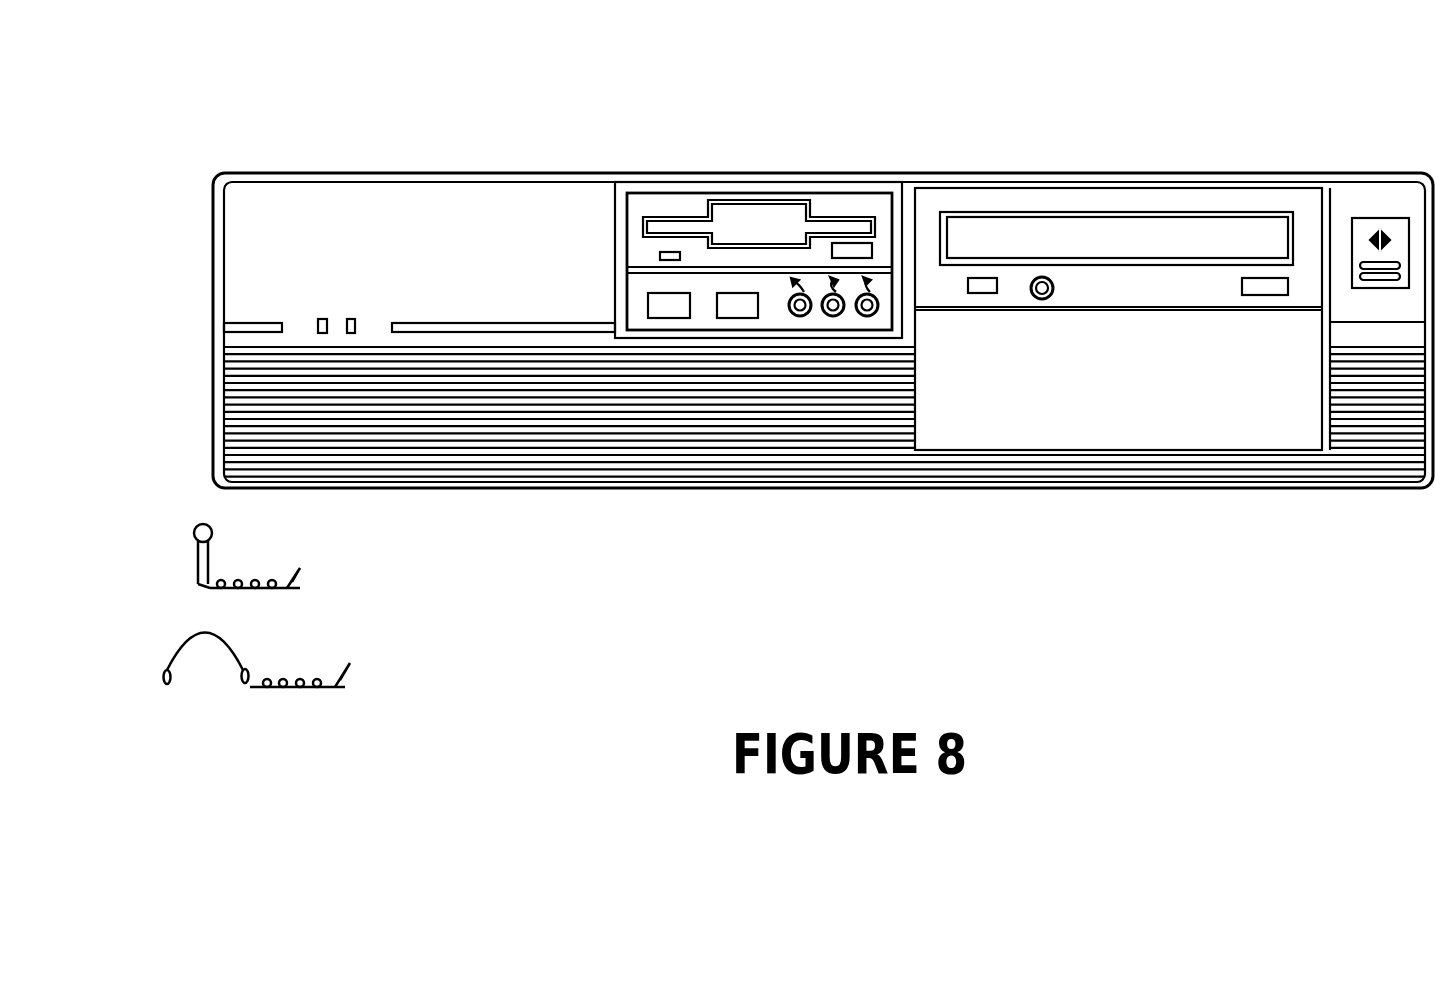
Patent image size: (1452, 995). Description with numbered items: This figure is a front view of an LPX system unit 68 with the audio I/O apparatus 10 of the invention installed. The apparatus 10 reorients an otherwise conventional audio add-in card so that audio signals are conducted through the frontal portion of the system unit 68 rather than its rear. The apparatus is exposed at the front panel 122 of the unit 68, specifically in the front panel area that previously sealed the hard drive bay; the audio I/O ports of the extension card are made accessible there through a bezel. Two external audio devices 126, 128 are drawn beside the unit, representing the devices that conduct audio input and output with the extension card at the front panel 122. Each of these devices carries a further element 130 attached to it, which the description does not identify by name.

The LPX system unit 68 is at (1150, 165).
The audio I/O apparatus 10 is at (640, 322).
The front panel 122 is at (1257, 418).
The external audio device 126 is at (630, 292).
The external audio device 128 is at (183, 633).
The coil spring 130 is at (300, 588).